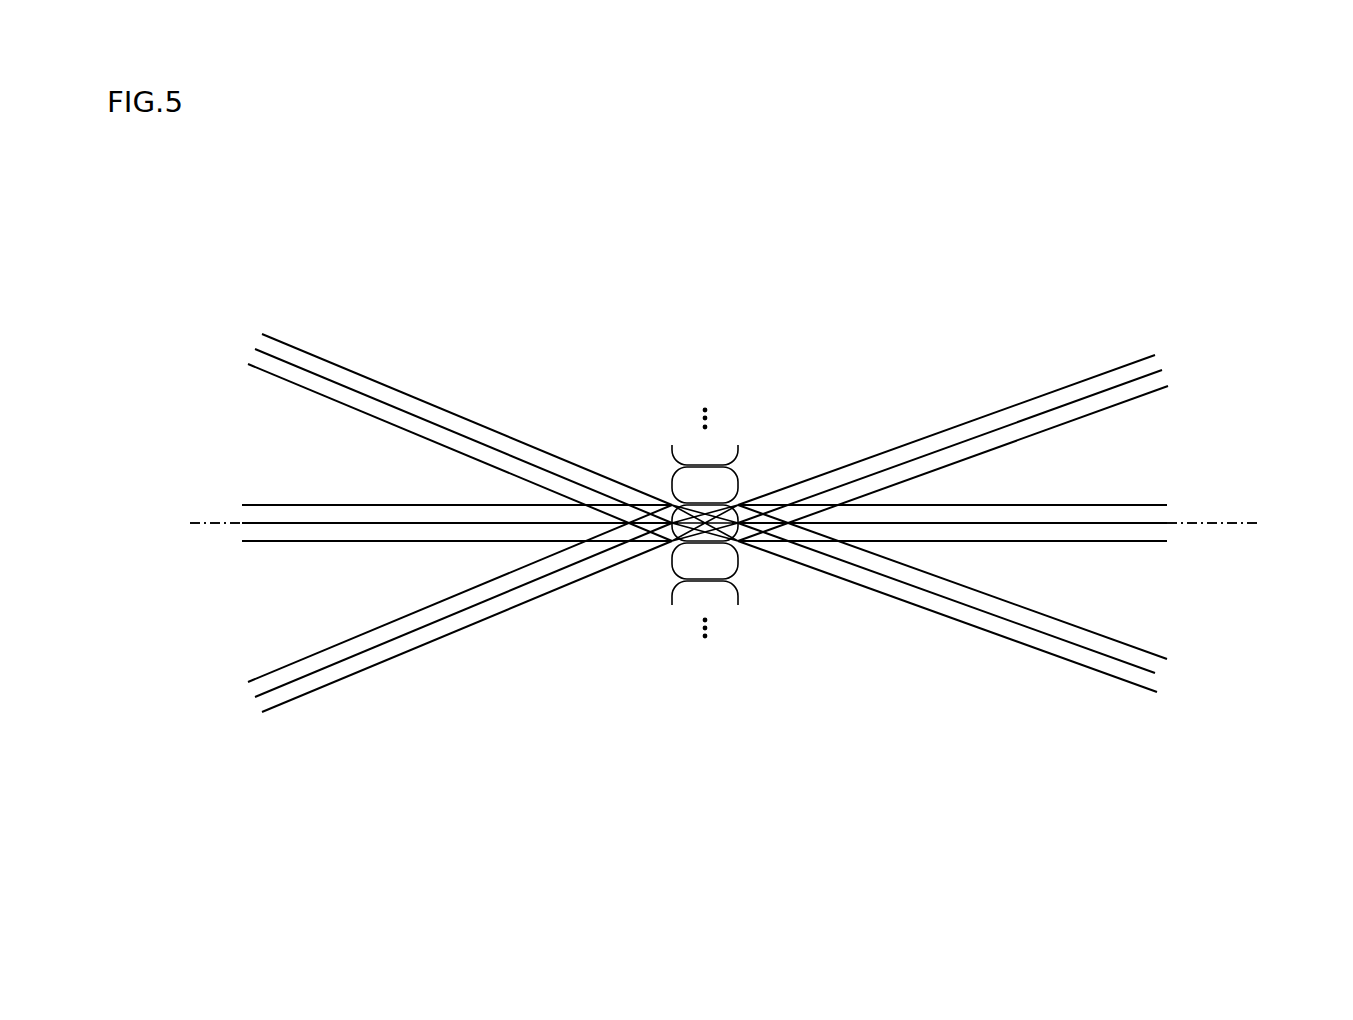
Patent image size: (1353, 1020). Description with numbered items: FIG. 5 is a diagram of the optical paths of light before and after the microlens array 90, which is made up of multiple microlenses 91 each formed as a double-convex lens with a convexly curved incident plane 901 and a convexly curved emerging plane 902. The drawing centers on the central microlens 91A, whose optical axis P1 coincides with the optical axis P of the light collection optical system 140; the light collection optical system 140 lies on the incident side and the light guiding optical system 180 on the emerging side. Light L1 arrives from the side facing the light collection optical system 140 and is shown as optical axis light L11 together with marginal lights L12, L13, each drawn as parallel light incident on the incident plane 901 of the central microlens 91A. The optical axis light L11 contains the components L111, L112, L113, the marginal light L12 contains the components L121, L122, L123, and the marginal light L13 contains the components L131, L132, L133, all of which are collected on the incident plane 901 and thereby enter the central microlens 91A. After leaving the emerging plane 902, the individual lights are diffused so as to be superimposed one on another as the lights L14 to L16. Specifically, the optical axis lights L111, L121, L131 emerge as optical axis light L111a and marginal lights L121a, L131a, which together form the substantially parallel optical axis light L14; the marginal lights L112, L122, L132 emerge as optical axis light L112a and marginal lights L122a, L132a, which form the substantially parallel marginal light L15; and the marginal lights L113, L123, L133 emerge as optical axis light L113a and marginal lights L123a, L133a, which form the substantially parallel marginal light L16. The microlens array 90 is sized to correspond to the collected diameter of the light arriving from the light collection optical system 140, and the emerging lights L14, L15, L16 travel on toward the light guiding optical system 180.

The light collection optical system 140 is at (353, 250).
The light guiding optical system 180 is at (1057, 253).
The optical axis of central microlens P1 is at (687, 523).
The optical axis of light collection optical system P is at (687, 523).
The light L1 is at (707, 526).
The optical axis light L11 is at (396, 541).
The marginal light L12 is at (396, 402).
The marginal light L13 is at (396, 647).
The optical axis light L14 is at (1016, 541).
The marginal light L15 is at (1010, 647).
The marginal light L16 is at (1010, 401).
The optical axis light L111 is at (267, 525).
The marginal light L112 is at (280, 505).
The marginal light L113 is at (285, 543).
The optical axis light L121 is at (266, 353).
The marginal light L122 is at (295, 348).
The marginal light L123 is at (270, 375).
The optical axis light L131 is at (270, 693).
The marginal light L132 is at (270, 672).
The marginal light L133 is at (351, 680).
The optical axis light L111a is at (1147, 525).
The optical axis light L112a is at (1153, 673).
The optical axis light L113a is at (1153, 374).
The marginal light L121a is at (1125, 542).
The marginal light L122a is at (1118, 680).
The marginal light L123a is at (1152, 389).
The marginal light L131a is at (1123, 504).
The marginal light L132a is at (1153, 658).
The marginal light L133a is at (1117, 366).
The microlens array 90 is at (705, 572).
The microlens 91 is at (711, 548).
The central microlens 91A is at (718, 621).
The incident plane 901 is at (660, 600).
The emerging plane 902 is at (750, 600).